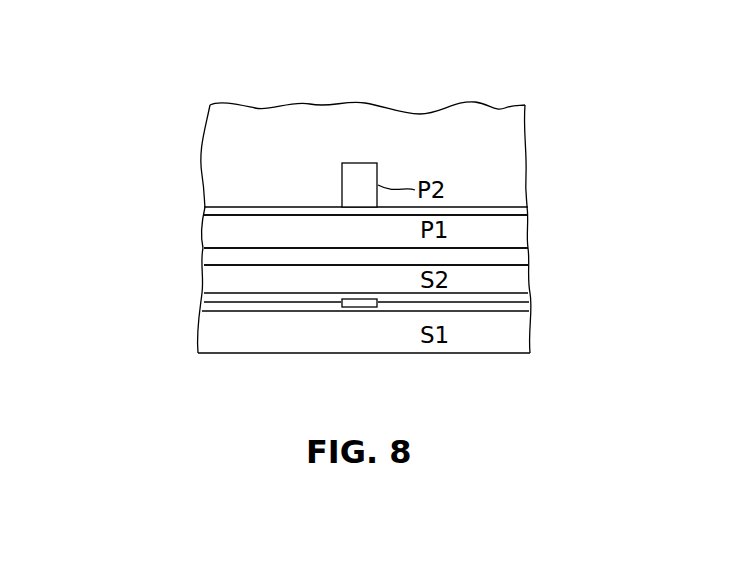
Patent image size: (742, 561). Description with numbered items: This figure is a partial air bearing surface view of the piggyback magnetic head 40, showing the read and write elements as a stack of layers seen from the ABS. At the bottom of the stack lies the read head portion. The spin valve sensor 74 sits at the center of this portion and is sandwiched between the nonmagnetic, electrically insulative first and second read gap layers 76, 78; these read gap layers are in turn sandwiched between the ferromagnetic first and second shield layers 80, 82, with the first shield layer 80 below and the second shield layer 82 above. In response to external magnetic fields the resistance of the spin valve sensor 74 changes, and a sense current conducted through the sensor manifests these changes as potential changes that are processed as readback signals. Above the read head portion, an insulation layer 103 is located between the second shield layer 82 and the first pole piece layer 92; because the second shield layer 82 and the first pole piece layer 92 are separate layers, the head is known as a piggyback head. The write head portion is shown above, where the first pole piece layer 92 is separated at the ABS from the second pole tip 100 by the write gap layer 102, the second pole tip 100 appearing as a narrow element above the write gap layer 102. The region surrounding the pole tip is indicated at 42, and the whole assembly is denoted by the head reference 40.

The piggyback magnetic head 40 is at (547, 121).
The upper layer / overcoat 42 is at (213, 133).
The first pole piece layer 92 is at (215, 228).
The second shield layer 82 is at (208, 282).
The first shield layer 80 is at (518, 335).
The second pole tip 100 is at (356, 172).
The write gap layer 102 is at (277, 207).
The insulation layer 103 is at (518, 257).
The first read gap layer 76 is at (267, 311).
The spin valve sensor 74 is at (357, 307).
The second read gap layer 78 is at (487, 298).